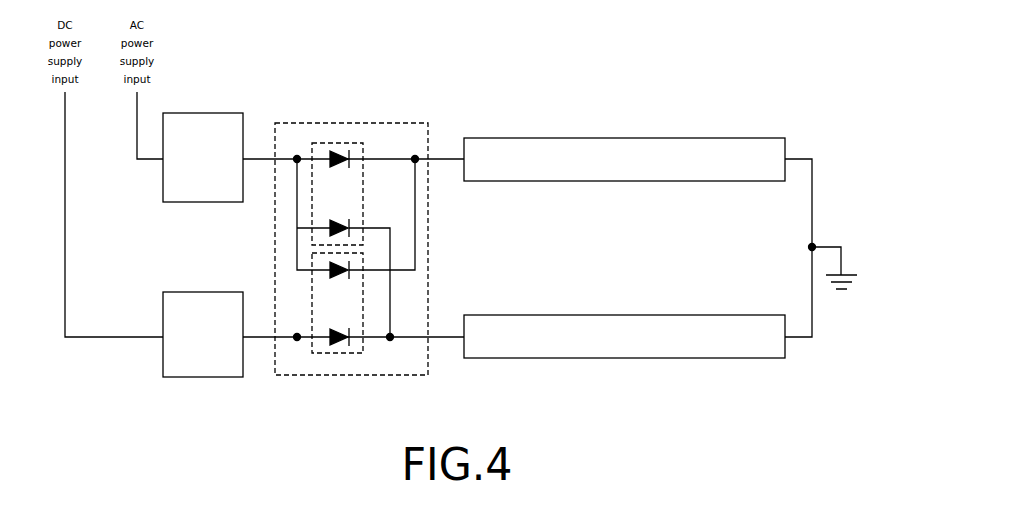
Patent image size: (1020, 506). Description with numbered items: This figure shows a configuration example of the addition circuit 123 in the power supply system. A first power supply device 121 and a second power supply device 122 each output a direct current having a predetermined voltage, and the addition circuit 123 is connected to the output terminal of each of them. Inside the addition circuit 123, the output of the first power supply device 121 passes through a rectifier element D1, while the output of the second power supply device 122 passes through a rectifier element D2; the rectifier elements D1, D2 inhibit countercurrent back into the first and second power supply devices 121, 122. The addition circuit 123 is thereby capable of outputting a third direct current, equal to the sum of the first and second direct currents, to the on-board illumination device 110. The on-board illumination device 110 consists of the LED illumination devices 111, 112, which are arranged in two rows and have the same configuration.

The on-board illumination device 110 is at (624, 248).
The LED illumination device 111 is at (685, 183).
The LED illumination device 112 is at (624, 313).
The first power supply device 121 is at (210, 111).
The second power supply device 122 is at (210, 291).
The addition circuit 123 is at (351, 252).
The rectifier element D1 is at (322, 141).
The rectifier element D2 is at (318, 355).